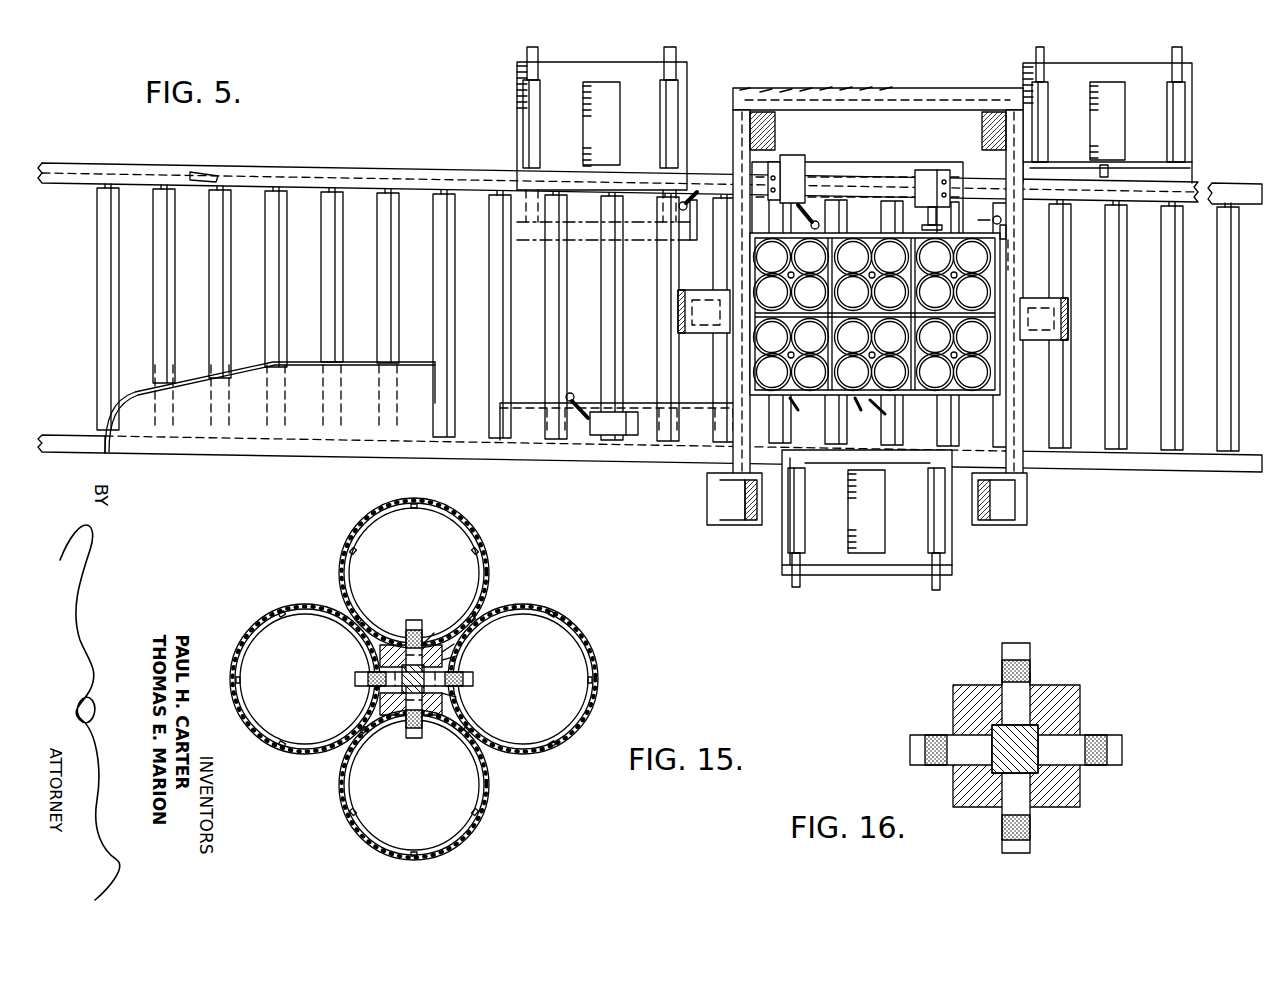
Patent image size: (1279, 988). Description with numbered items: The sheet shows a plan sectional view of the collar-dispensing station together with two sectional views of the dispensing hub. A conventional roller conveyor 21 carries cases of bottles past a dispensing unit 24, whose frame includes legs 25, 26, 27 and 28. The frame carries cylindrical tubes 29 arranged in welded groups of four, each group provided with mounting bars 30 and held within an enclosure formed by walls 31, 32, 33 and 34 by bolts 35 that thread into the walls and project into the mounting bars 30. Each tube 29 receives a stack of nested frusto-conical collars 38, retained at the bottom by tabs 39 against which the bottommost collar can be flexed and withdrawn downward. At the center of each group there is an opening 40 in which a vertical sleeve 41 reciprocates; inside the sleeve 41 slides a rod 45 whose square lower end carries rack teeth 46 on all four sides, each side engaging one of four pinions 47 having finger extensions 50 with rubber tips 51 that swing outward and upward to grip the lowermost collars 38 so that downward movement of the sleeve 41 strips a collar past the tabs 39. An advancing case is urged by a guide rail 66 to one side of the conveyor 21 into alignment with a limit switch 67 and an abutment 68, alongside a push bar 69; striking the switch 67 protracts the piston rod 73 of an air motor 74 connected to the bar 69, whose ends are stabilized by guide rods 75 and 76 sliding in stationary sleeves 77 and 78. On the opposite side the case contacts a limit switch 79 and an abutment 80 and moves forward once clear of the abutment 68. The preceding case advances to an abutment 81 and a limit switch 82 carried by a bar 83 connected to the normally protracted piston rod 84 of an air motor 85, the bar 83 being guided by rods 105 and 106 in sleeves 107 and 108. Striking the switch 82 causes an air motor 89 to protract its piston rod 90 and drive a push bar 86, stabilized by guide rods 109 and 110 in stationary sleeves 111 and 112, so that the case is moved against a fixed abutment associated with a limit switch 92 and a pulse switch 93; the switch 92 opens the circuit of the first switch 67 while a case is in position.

In FIG. 5, the roller conveyor 21 is at (140, 166).
In FIG. 5, the dispensing unit 24 is at (910, 83).
In FIG. 5, the leg 25 is at (740, 526).
In FIG. 5, the leg 26 is at (992, 526).
In FIG. 5, the leg 27 is at (764, 110).
In FIG. 5, the leg 28 is at (986, 114).
In FIG. 5, the cylindrical tubes 29 is at (872, 315).
In FIG. 15, the cylindrical tubes 29 is at (506, 607).
In FIG. 5, the mounting bars 30 is at (778, 232).
In FIG. 5, the enclosure wall 31 is at (755, 395).
In FIG. 5, the enclosure wall 32 is at (888, 232).
In FIG. 5, the enclosure wall 33 is at (728, 266).
In FIG. 5, the enclosure wall 34 is at (1006, 285).
In FIG. 5, the bolts 35 is at (856, 232).
In FIG. 15, the frusto-conical collars 38 is at (414, 679).
In FIG. 15, the tabs 39 is at (474, 552).
In FIG. 15, the opening 40 is at (454, 652).
In FIG. 5, the vertical sleeve 41 is at (873, 315).
In FIG. 15, the vertical sleeve 41 is at (431, 635).
In FIG. 16, the vertical sleeve 41 is at (1034, 749).
In FIG. 15, the rod 45 is at (400, 689).
In FIG. 16, the rod 45 is at (992, 732).
In FIG. 16, the rack teeth 46 is at (1048, 700).
In FIG. 15, the pinions 47 is at (416, 636).
In FIG. 16, the pinions 47 is at (1028, 694).
In FIG. 16, the finger extensions 50 is at (1018, 646).
In FIG. 15, the rubber tips 51 is at (406, 635).
In FIG. 16, the rubber tips 51 is at (1002, 665).
In FIG. 5, the guide rail 66 is at (190, 373).
In FIG. 5, the limit switch 67 is at (680, 206).
In FIG. 5, the abutment 68 is at (691, 230).
In FIG. 5, the push bar 69 is at (582, 220).
In FIG. 5, the piston rod 73 is at (605, 160).
In FIG. 5, the air motor 74 is at (616, 116).
In FIG. 5, the guide rod 75 is at (526, 56).
In FIG. 5, the guide rod 76 is at (665, 56).
In FIG. 5, the stationary sleeve 77 is at (524, 121).
In FIG. 5, the stationary sleeve 78 is at (665, 130).
In FIG. 5, the limit switch 79 is at (606, 435).
In FIG. 5, the abutment 80 is at (634, 403).
In FIG. 5, the abutment 81 is at (1015, 241).
In FIG. 5, the limit switch 82 is at (1015, 222).
In FIG. 5, the bar 83 is at (1112, 166).
In FIG. 5, the piston rod 84 is at (1088, 175).
In FIG. 5, the air motor 85 is at (1123, 116).
In FIG. 5, the push bar 86 is at (907, 458).
In FIG. 5, the air motor 89 is at (878, 515).
In FIG. 5, the piston rod 90 is at (848, 468).
In FIG. 5, the limit switch 92 is at (796, 163).
In FIG. 5, the pulse switch 93 is at (930, 170).
In FIG. 5, the guide rod 105 is at (1044, 58).
In FIG. 5, the guide rod 106 is at (1184, 52).
In FIG. 5, the sleeve 107 is at (1047, 114).
In FIG. 5, the sleeve 108 is at (1184, 118).
In FIG. 5, the guide rod 109 is at (796, 590).
In FIG. 5, the guide rod 110 is at (938, 590).
In FIG. 5, the stationary sleeve 111 is at (804, 511).
In FIG. 5, the stationary sleeve 112 is at (928, 537).